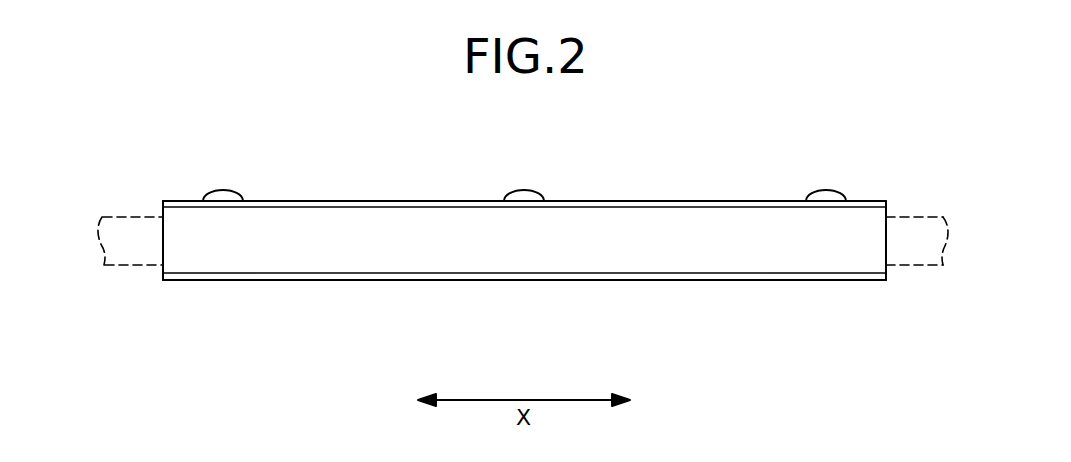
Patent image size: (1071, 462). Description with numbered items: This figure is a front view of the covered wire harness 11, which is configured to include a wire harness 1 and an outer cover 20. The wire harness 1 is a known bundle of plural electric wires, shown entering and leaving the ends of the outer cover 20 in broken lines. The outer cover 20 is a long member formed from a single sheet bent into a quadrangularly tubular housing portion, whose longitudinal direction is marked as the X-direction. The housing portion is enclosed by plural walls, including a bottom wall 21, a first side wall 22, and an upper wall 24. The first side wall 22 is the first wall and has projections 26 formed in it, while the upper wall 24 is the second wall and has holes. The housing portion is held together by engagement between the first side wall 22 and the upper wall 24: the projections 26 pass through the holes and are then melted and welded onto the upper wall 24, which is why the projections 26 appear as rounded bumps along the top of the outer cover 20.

The wire harness 1 is at (130, 216).
The covered wire harness 11 is at (668, 182).
The outer cover 20 is at (345, 200).
The bottom wall 21 is at (837, 283).
The first side wall 22 is at (764, 257).
The upper wall 24 is at (735, 200).
The projections 26 is at (221, 189).